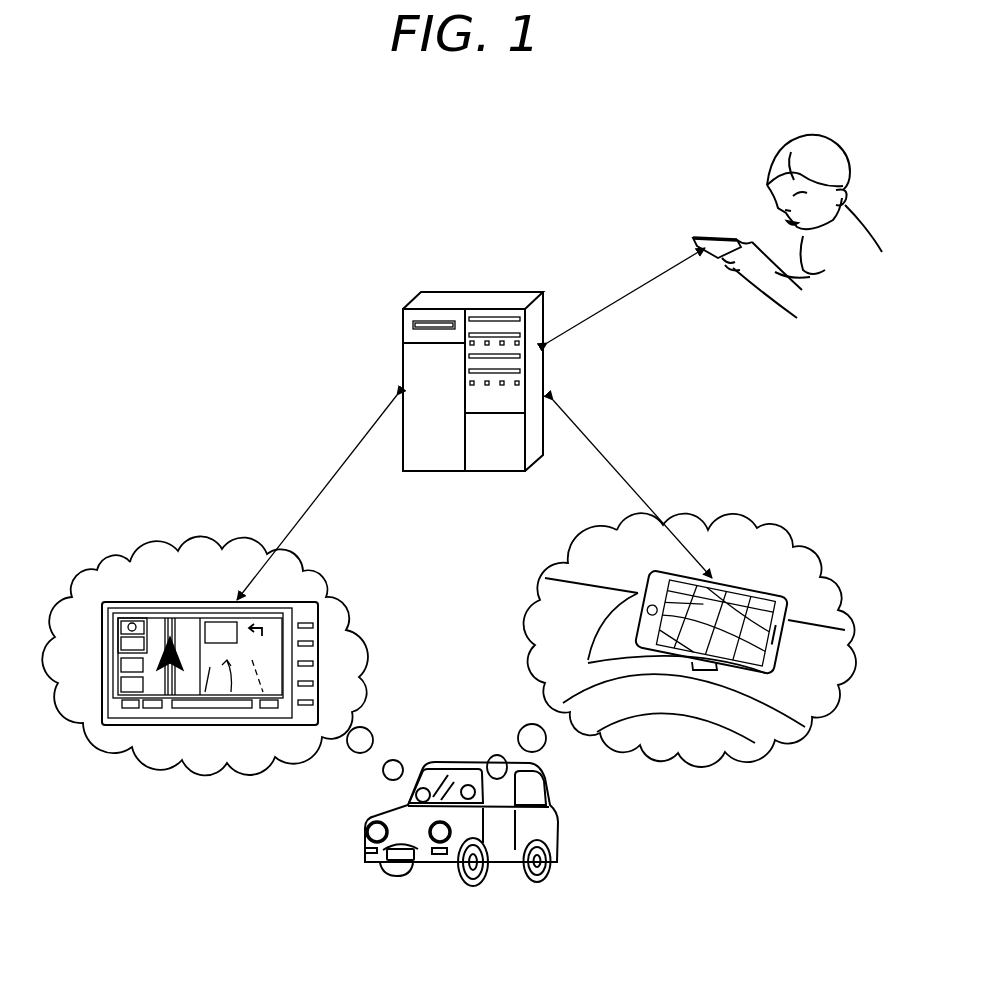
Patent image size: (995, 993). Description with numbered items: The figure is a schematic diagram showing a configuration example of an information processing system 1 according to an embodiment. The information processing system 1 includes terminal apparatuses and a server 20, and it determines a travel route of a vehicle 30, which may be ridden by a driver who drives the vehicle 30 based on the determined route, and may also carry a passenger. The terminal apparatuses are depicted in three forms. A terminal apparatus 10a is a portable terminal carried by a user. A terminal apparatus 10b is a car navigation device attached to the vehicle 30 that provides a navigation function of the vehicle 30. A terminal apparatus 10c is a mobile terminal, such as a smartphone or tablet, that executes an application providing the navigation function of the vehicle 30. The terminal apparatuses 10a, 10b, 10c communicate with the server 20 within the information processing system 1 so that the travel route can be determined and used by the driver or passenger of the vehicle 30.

The information processing system 1 is at (284, 168).
The server 20 is at (476, 292).
The terminal apparatus 10a is at (707, 237).
The terminal apparatus 10b is at (130, 602).
The terminal apparatus 10c is at (763, 590).
The vehicle 30 is at (353, 842).